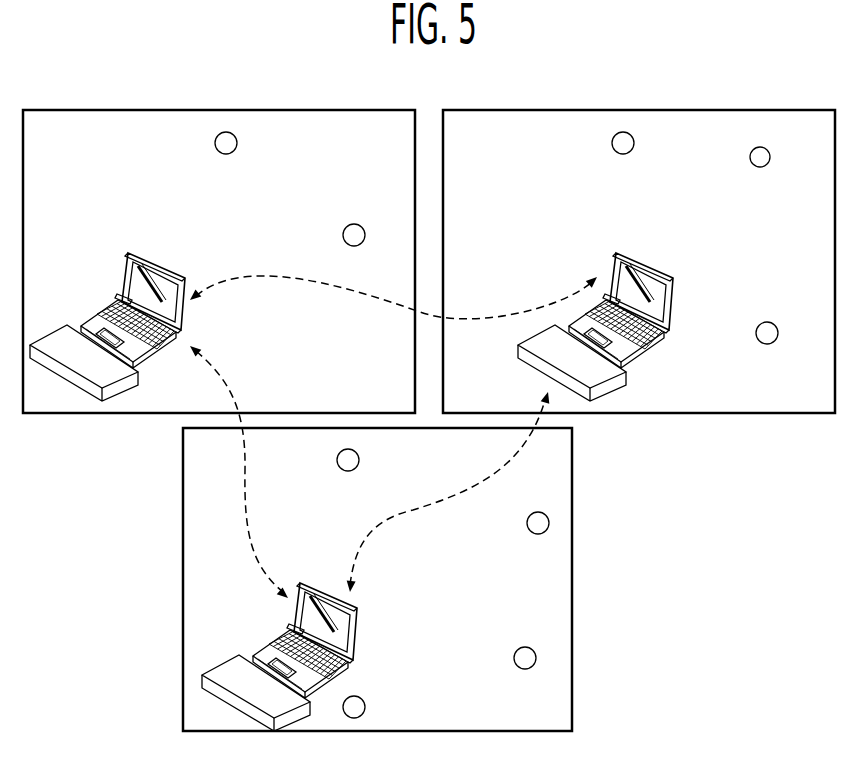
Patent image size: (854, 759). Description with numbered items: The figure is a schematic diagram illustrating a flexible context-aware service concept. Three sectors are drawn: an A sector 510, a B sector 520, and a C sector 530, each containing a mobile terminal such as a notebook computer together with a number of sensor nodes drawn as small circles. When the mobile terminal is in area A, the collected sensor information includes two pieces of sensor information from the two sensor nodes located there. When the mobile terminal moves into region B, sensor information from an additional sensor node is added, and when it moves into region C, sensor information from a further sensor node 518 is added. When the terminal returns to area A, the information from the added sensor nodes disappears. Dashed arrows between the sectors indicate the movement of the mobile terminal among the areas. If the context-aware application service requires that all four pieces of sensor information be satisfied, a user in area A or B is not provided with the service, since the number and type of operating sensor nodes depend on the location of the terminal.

The A sector 510 is at (63, 110).
The B sector 520 is at (795, 110).
The C sector 530 is at (573, 542).
The sensor node 518 is at (528, 647).